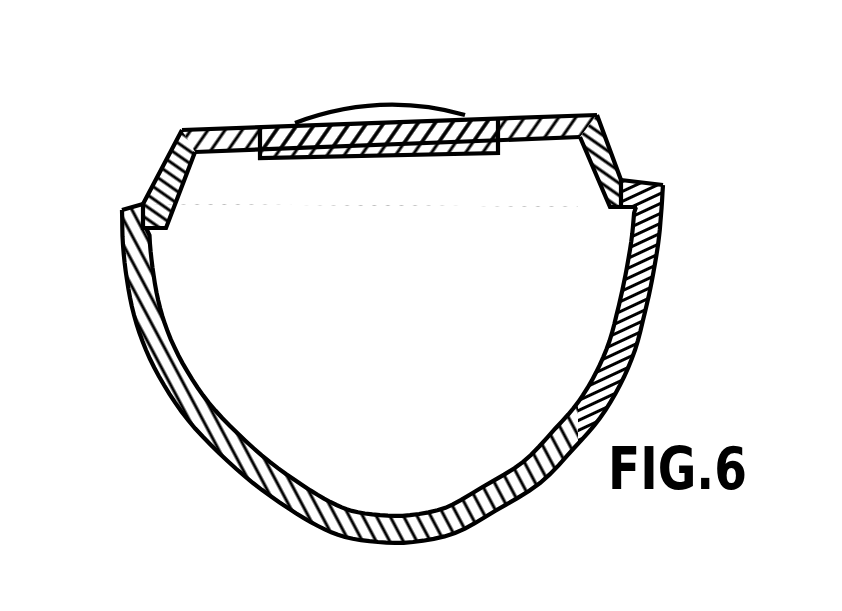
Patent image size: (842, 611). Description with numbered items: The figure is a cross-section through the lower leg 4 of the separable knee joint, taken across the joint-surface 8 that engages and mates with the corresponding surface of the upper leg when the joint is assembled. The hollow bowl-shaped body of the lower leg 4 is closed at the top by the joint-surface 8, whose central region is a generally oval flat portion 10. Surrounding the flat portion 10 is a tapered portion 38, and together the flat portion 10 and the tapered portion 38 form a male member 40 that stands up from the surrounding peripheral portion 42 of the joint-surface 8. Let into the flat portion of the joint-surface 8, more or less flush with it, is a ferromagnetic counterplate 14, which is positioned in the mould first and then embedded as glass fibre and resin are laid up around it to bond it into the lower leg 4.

The joint-surface 8 is at (542, 68).
The flat portion 10 is at (567, 116).
The ferromagnetic counterplate 14 is at (398, 127).
The tapered portion 38 is at (165, 163).
The male member 40 is at (229, 120).
The peripheral portion 42 is at (150, 190).
The lower leg 4 is at (636, 345).